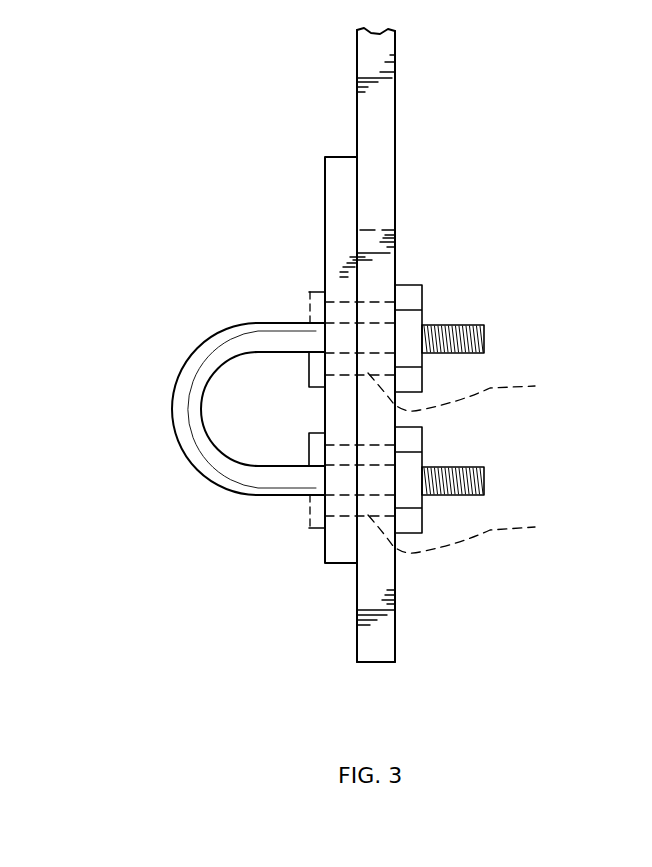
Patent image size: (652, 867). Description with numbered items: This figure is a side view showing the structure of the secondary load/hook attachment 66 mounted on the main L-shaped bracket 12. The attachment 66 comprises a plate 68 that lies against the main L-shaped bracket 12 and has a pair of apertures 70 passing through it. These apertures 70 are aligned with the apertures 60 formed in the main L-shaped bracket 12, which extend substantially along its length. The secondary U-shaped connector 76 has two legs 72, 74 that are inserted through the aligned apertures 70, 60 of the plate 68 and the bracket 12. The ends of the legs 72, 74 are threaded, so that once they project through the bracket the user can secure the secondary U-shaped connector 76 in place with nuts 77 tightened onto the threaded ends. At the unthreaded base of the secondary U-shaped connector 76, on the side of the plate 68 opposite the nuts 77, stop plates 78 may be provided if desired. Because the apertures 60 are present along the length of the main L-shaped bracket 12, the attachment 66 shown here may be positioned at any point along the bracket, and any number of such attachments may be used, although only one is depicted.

The main L-shaped bracket 12 is at (395, 647).
The apertures 60 is at (370, 195).
The secondary load/hook attachment 66 is at (183, 298).
The plate 68 is at (340, 565).
The apertures 70 is at (308, 295).
The leg 72 is at (484, 340).
The leg 74 is at (484, 478).
The secondary U-shaped connector 76 is at (172, 414).
The nuts 77 is at (422, 291).
The stop plates 78 is at (309, 378).